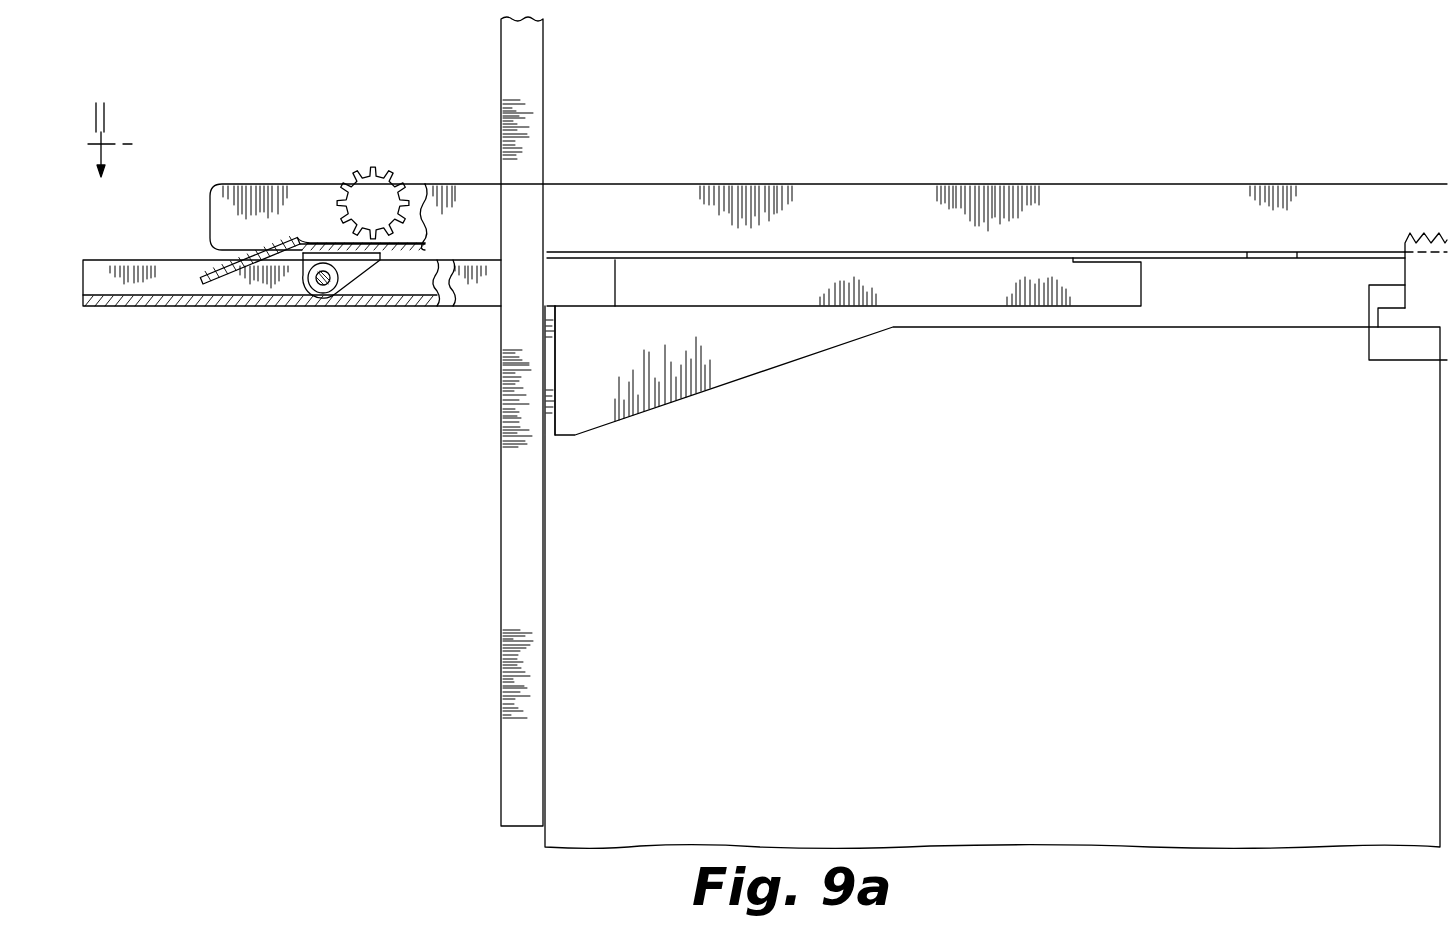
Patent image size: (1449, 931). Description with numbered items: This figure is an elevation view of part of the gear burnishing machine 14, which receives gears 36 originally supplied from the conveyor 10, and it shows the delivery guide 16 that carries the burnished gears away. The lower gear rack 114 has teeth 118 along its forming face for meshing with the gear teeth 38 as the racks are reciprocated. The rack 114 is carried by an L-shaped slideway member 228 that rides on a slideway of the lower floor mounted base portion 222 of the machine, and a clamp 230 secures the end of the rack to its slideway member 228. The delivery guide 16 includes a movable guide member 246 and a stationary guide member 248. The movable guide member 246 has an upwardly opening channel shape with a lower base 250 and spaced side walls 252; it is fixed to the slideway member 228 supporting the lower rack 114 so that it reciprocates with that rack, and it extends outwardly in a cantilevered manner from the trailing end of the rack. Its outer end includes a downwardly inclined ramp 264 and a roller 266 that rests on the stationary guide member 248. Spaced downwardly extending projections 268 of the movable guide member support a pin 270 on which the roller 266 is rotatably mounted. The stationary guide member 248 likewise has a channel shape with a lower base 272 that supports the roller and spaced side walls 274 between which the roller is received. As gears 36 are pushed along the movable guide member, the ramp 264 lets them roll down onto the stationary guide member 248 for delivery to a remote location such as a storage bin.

The conveyor 10 is at (126, 135).
The gear burnishing machine 14 is at (494, 733).
The delivery guide 16 is at (1131, 182).
The gear 36 is at (387, 203).
The gear teeth 38 is at (374, 163).
The lower gear rack 114 is at (1423, 312).
The teeth 118 is at (1431, 232).
The lower floor mounted base portion 222 is at (1218, 820).
The slideway member 228 is at (1383, 348).
The clamp 230 is at (1378, 292).
The movable guide member 246 is at (690, 184).
The stationary guide member 248 is at (703, 307).
The lower base 250 is at (386, 250).
The side walls 252 is at (873, 200).
The downwardly inclined ramp 264 is at (220, 280).
The roller 266 is at (322, 294).
The downwardly extending projections 268 is at (356, 285).
The pin 270 is at (323, 270).
The lower base 272 is at (440, 300).
The side walls 274 is at (488, 277).